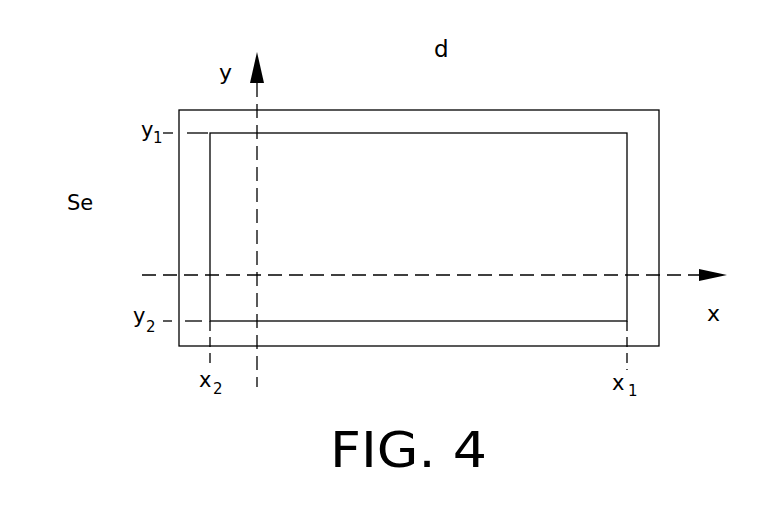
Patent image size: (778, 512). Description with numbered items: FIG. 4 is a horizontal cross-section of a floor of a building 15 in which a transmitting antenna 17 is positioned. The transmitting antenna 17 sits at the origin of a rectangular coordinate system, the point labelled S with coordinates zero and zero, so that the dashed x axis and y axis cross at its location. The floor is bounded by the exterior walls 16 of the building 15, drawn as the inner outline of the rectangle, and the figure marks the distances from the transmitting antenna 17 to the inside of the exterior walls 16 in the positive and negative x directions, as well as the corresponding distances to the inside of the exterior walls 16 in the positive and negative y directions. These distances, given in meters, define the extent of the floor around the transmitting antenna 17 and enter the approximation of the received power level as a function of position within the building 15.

The building 15 is at (557, 90).
The exterior walls 16 is at (368, 110).
The transmitting antenna 17 is at (257, 275).